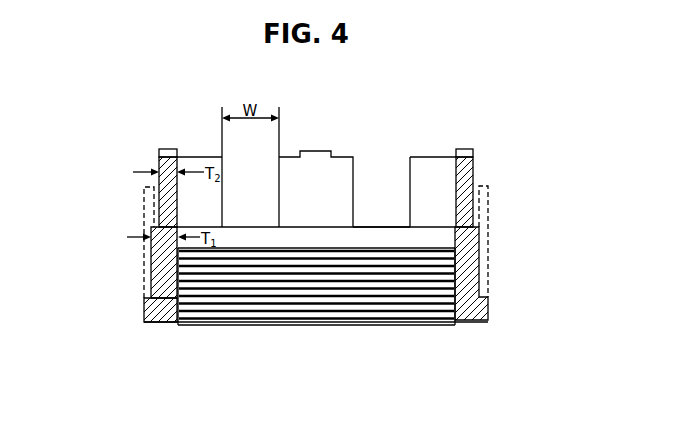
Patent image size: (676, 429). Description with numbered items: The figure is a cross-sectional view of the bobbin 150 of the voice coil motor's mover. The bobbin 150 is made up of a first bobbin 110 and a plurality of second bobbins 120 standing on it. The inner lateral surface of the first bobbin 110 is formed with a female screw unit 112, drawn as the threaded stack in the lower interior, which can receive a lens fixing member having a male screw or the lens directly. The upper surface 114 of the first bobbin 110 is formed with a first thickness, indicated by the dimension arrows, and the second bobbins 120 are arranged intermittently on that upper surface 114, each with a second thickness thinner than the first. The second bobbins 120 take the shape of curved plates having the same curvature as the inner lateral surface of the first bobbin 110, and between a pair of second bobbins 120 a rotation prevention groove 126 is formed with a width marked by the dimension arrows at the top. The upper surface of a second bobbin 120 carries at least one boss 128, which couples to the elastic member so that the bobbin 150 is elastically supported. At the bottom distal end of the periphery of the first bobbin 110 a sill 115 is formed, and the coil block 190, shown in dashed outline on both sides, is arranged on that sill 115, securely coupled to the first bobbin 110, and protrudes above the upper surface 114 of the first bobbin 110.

The first bobbin 110 is at (141, 313).
The female screw unit 112 is at (180, 298).
The upper surface 114 is at (152, 220).
The sill 115 is at (486, 282).
The second bobbin 120 is at (152, 161).
The rotation prevention groove 126 is at (373, 186).
The boss 128 is at (320, 152).
The bobbin 150 is at (485, 168).
The coil block 190 is at (488, 190).